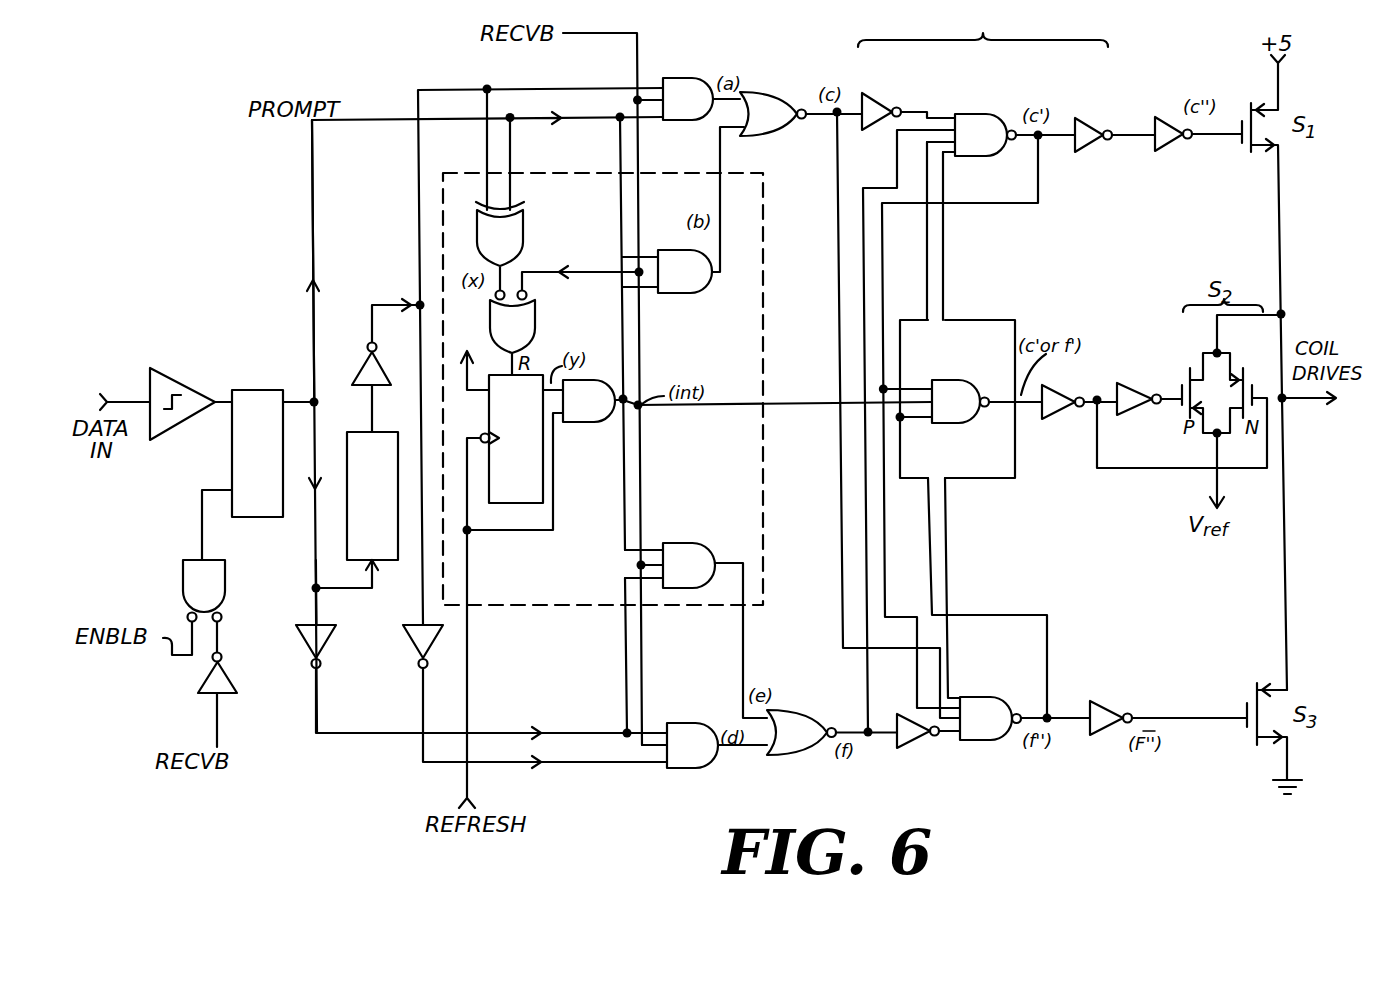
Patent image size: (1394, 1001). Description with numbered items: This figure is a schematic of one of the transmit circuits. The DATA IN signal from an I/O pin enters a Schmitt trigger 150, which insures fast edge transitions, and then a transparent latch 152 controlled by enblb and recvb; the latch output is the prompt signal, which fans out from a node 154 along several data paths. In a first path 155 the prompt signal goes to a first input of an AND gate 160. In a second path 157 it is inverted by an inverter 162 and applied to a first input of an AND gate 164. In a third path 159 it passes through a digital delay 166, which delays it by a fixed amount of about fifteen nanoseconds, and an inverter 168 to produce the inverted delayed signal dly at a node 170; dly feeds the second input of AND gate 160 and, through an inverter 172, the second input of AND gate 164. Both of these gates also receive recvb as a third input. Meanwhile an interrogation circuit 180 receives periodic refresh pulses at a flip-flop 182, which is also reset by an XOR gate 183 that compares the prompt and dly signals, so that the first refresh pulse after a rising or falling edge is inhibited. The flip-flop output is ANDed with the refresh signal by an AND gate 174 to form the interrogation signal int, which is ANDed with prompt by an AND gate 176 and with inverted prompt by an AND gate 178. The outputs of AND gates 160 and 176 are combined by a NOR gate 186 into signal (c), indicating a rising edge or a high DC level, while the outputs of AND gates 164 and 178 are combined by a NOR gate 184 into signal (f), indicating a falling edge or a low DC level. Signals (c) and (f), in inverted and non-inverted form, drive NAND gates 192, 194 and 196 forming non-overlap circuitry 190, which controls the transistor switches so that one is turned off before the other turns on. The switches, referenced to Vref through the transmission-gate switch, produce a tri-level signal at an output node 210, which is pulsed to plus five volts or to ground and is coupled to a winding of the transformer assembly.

The Schmitt trigger 150 is at (172, 383).
The transparent latch 152 is at (270, 390).
The node 154 is at (318, 403).
The first path 155 is at (312, 222).
The second path 157 is at (312, 603).
The third path 159 is at (316, 586).
The AND gate 160 is at (675, 86).
The inverter 162 is at (327, 642).
The AND gate 164 is at (707, 757).
The digital delay 166 is at (397, 420).
The inverter 168 is at (379, 366).
The node 170 is at (391, 299).
The inverter 172 is at (405, 627).
The AND gate 174 is at (602, 412).
The AND gate 176 is at (700, 284).
The AND gate 178 is at (704, 577).
The interrogation circuit 180 is at (590, 605).
The flip-flop 182 is at (530, 477).
The XOR gate 183 is at (522, 238).
The NOR gate 184 is at (810, 745).
The NOR gate 186 is at (771, 92).
The non-overlap circuitry 190 is at (983, 29).
The NAND gate 192 is at (981, 121).
The NAND gate 194 is at (974, 414).
The NAND gate 196 is at (1001, 731).
The output node 210 is at (1287, 314).